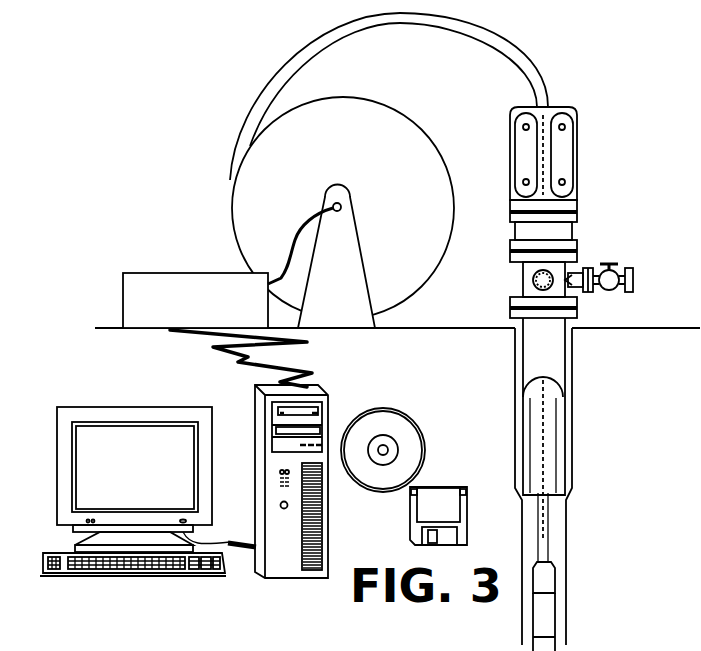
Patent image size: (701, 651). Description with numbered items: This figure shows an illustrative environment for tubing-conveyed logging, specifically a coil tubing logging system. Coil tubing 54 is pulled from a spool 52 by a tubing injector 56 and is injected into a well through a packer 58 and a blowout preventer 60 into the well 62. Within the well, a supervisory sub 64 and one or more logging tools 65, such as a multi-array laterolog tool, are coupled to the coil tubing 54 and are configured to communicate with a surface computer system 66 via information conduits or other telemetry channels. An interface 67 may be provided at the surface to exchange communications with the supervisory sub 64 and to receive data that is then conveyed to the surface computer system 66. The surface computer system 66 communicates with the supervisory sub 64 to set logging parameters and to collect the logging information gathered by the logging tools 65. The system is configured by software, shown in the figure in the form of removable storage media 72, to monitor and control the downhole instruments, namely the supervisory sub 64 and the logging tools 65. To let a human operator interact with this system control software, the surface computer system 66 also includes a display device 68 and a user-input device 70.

The spool 52 is at (336, 171).
The coil tubing 54 is at (275, 78).
The tubing injector 56 is at (572, 142).
The packer 58 is at (575, 226).
The blowout preventer 60 is at (520, 278).
The well 62 is at (567, 373).
The supervisory sub 64 is at (557, 577).
The logging tools 65 is at (557, 620).
The surface computer system 66 is at (258, 517).
The interface 67 is at (170, 272).
The display device 68 is at (68, 524).
The user-input device 70 is at (65, 574).
The removable storage media 72 is at (410, 502).